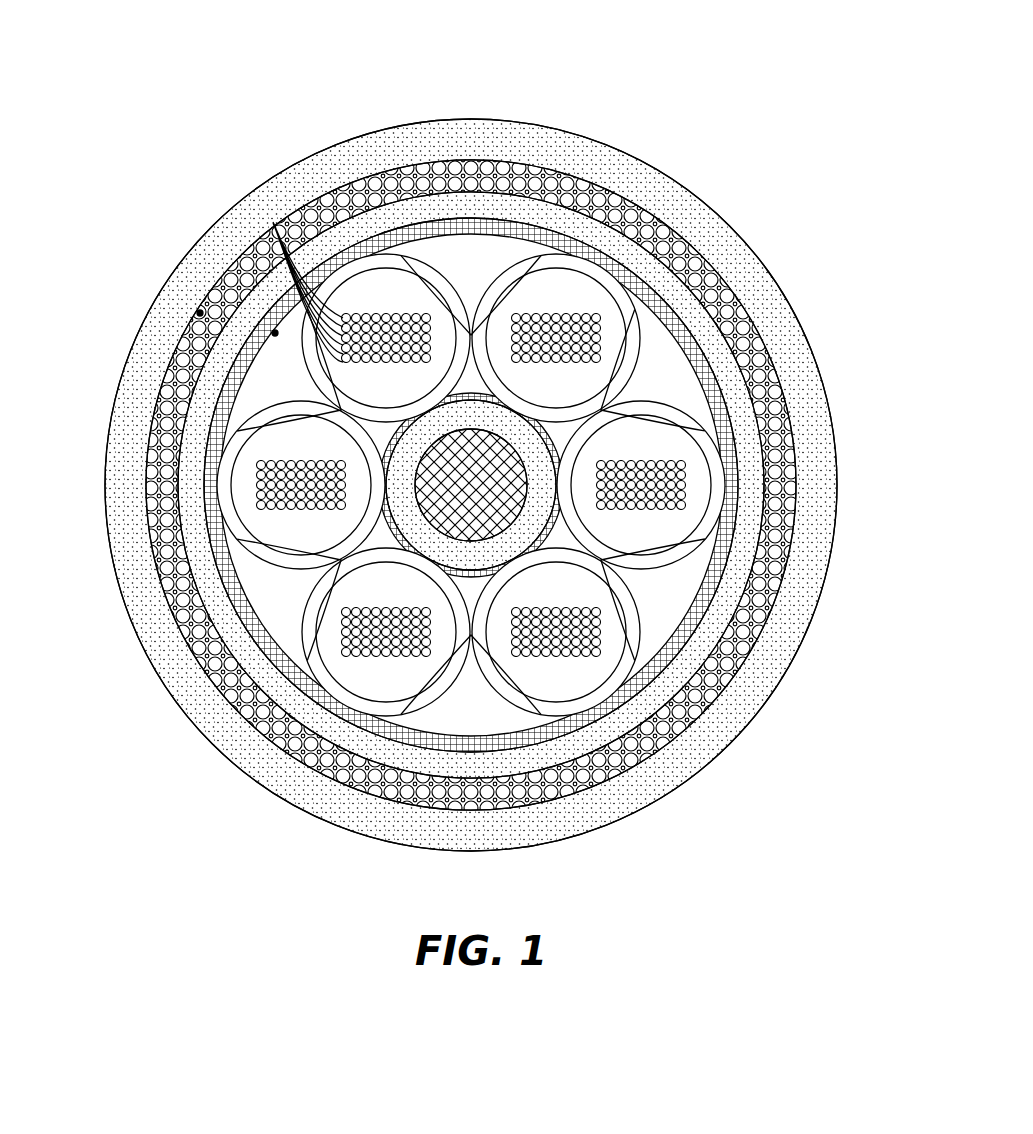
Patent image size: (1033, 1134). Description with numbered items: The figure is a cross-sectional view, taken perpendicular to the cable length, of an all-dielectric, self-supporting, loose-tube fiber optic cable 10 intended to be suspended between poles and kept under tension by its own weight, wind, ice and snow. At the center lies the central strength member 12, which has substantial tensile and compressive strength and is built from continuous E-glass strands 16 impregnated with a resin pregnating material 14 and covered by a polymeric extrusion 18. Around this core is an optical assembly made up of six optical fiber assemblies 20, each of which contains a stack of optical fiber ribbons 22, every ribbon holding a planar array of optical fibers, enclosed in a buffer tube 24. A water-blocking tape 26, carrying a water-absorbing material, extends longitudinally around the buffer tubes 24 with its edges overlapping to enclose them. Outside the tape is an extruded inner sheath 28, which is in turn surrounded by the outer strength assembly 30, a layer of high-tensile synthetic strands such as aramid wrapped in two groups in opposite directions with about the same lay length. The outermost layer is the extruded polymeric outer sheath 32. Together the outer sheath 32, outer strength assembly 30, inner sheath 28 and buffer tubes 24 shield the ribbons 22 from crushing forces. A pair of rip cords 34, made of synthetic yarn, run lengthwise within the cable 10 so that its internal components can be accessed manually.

The fiber optic cable 10 is at (690, 102).
The central strength member 12 is at (660, 373).
The pregnating material 14 is at (538, 510).
The glass strands 16 is at (472, 506).
The polymeric extrusion 18 is at (388, 512).
The optical fiber assemblies 20 is at (503, 262).
The optical fiber ribbons 22 is at (273, 222).
The buffer tube 24 is at (445, 272).
The water-blocking tape 26 is at (233, 602).
The inner sheath 28 is at (760, 407).
The outer strength assembly 30 is at (800, 460).
The outer sheath 32 is at (840, 480).
The rip cords 34 is at (275, 333).